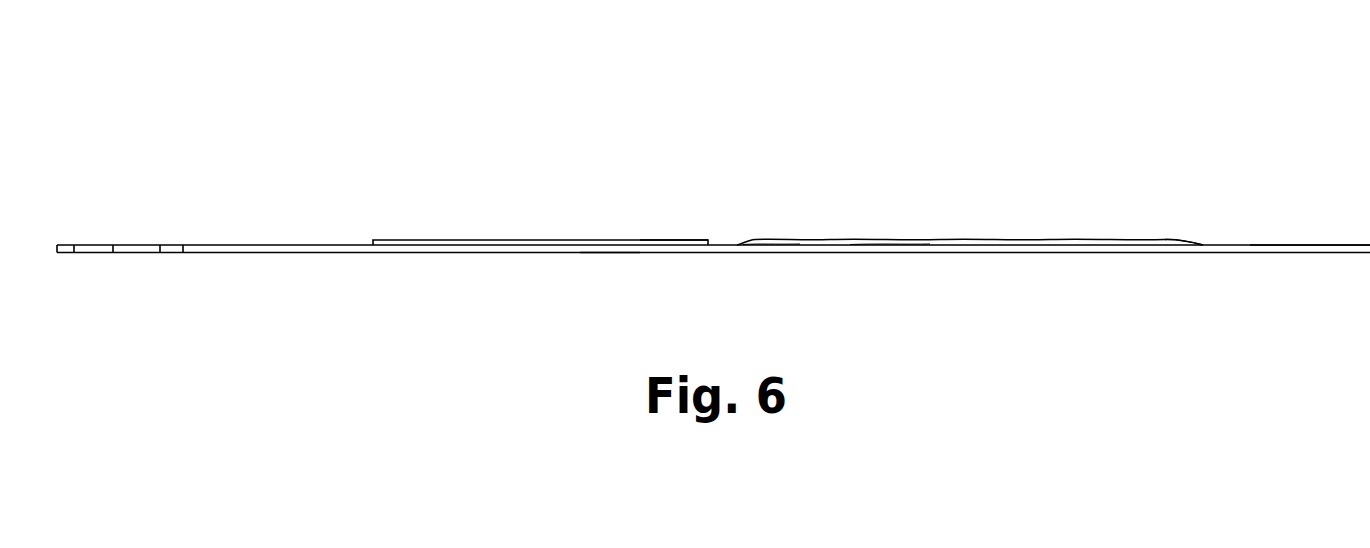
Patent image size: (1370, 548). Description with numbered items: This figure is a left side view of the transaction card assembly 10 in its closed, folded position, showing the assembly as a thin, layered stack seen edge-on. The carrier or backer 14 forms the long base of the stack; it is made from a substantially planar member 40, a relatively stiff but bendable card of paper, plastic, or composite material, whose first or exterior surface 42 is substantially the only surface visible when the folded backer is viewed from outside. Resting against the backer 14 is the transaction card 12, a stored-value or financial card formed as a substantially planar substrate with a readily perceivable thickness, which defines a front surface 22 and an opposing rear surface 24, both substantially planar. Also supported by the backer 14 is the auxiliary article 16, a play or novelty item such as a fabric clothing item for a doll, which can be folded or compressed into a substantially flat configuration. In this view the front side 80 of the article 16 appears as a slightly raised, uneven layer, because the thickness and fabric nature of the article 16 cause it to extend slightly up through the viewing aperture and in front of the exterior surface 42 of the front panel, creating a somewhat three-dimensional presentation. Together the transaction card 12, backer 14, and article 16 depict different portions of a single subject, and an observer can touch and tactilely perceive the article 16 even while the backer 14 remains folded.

The transaction card assembly 10 is at (220, 110).
The transaction card 12 is at (530, 240).
The backer 14 is at (207, 254).
The article 16 is at (1201, 240).
The front surface 22 is at (673, 240).
The rear surface 24 is at (608, 253).
The substantially planar member 40 is at (183, 244).
The exterior surface 42 is at (1337, 245).
The front side 80 is at (1041, 240).